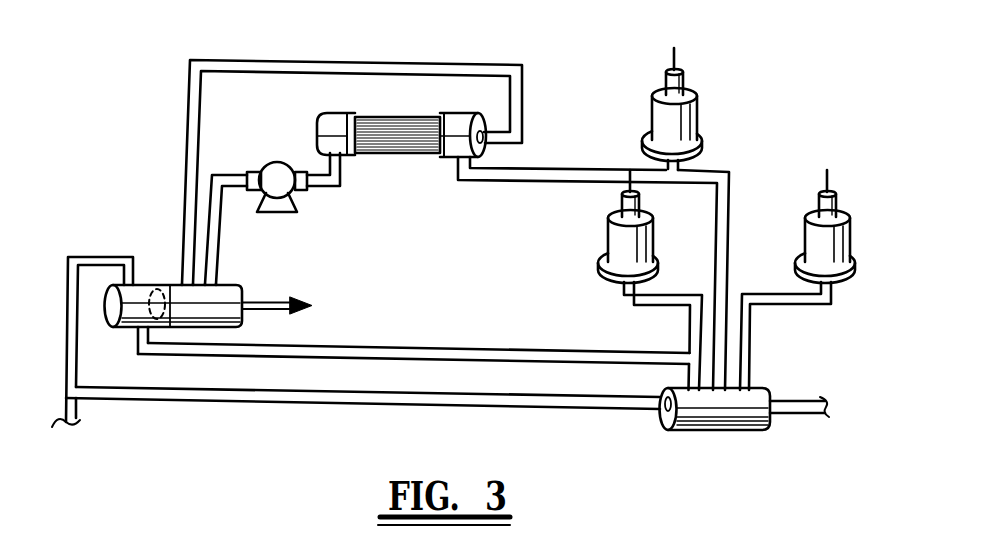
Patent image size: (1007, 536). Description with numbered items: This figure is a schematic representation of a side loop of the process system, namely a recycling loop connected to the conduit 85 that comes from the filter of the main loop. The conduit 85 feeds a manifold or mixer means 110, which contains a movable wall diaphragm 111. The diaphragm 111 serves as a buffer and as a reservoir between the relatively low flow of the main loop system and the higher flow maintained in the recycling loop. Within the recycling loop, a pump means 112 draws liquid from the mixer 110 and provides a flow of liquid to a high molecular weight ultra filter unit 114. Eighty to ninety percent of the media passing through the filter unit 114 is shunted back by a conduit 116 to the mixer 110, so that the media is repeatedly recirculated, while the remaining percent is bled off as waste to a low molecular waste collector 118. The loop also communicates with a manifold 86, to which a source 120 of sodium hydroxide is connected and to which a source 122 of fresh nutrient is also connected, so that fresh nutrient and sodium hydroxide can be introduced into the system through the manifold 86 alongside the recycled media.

The conduit 85 is at (270, 402).
The manifold 86 is at (737, 433).
The mixer means 110 is at (222, 295).
The movable wall diaphragm 111 is at (160, 287).
The pump means 112 is at (283, 185).
The high molecular weight ultra filter unit 114 is at (410, 152).
The conduit 116 is at (338, 62).
The low molecular waste collector 118 is at (697, 112).
The source of sodium hydroxide 120 is at (610, 237).
The source of fresh nutrient 122 is at (847, 247).